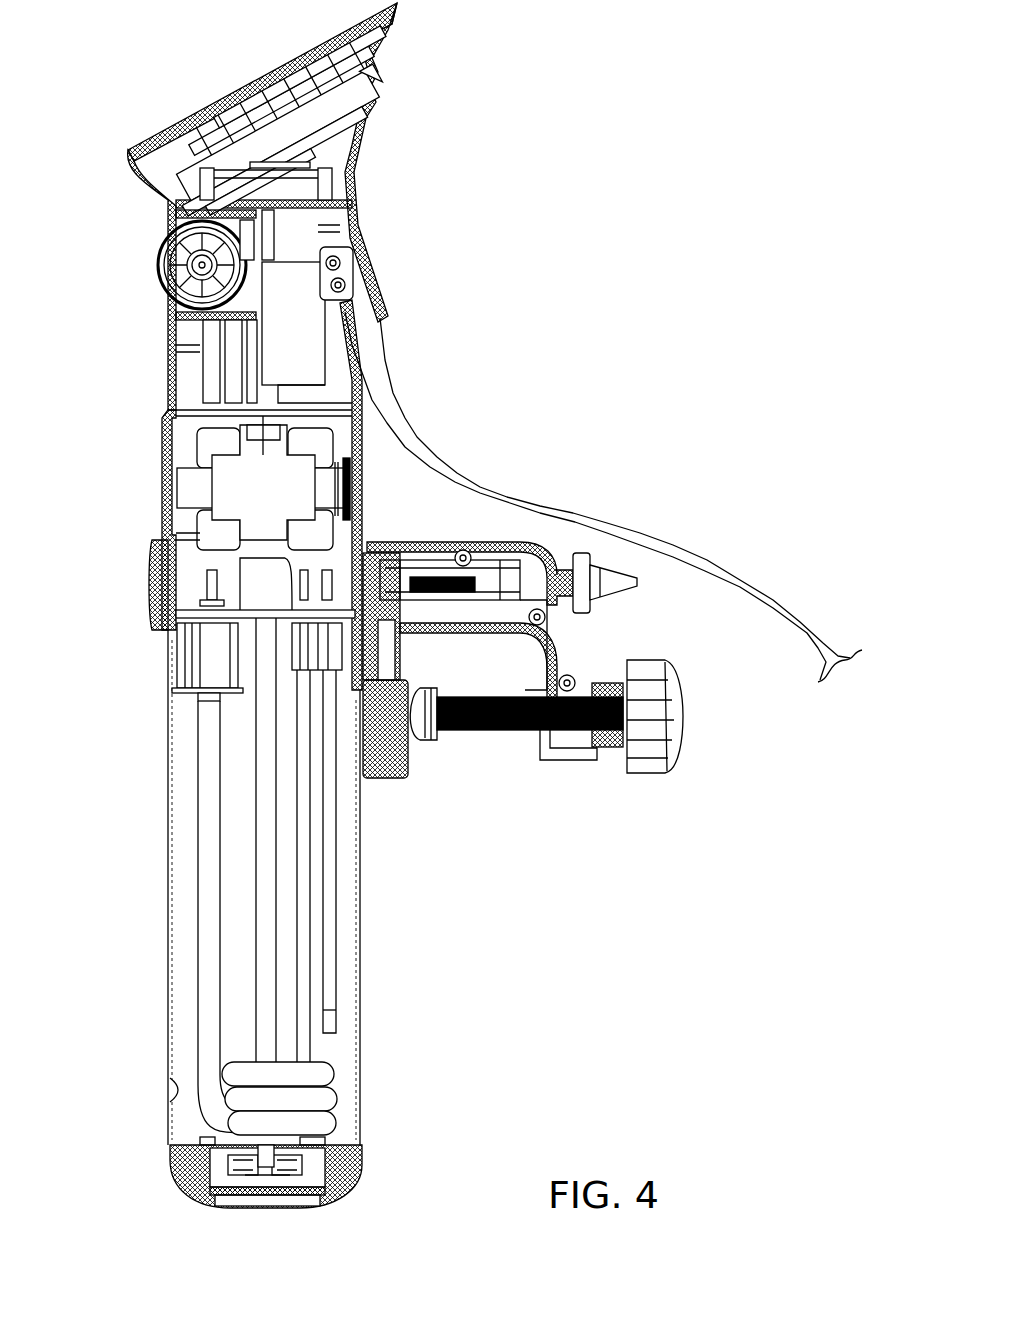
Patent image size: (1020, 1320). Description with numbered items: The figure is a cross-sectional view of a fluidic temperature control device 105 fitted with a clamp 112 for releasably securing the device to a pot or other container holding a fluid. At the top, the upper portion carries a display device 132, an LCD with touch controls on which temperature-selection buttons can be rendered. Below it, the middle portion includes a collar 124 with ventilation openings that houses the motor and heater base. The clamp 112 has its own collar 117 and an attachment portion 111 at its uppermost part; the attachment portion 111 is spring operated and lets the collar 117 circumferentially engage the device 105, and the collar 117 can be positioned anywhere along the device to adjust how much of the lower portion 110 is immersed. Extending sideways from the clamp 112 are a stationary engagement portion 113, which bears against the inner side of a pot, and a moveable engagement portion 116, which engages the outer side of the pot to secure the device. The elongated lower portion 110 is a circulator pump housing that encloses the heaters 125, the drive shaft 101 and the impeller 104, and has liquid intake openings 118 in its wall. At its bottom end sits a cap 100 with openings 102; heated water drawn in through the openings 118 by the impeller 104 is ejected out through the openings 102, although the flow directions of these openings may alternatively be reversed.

The fluidic temperature control device 105 is at (515, 32).
The display device 132 is at (268, 62).
The collar 124 is at (190, 485).
The collar 117 is at (165, 577).
The attachment portion 111 is at (632, 582).
The clamp 112 is at (725, 723).
The stationary engagement portion 113 is at (408, 762).
The moveable engagement portion 116 is at (522, 735).
The lower portion 110 is at (362, 907).
The liquid intake openings 118 is at (170, 1090).
The heaters 125 is at (330, 1120).
The cap 100 is at (345, 1195).
The drive shaft 101 is at (258, 1160).
The impeller 104 is at (290, 1160).
The openings 102 is at (280, 1200).